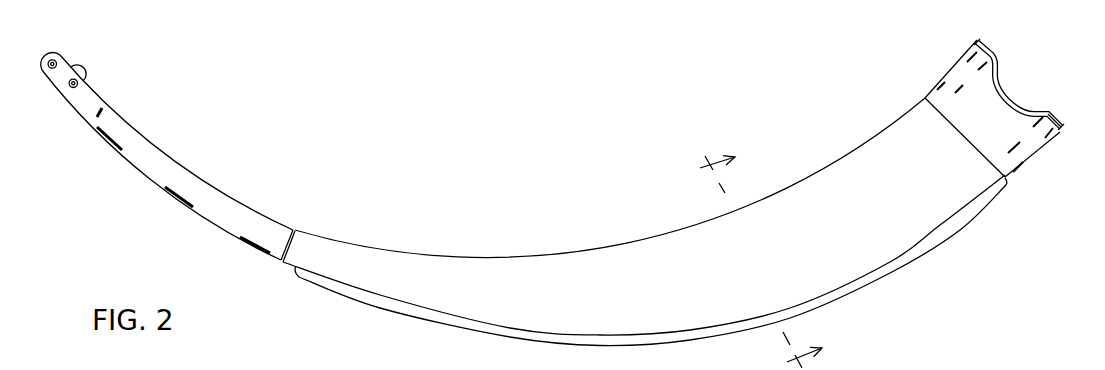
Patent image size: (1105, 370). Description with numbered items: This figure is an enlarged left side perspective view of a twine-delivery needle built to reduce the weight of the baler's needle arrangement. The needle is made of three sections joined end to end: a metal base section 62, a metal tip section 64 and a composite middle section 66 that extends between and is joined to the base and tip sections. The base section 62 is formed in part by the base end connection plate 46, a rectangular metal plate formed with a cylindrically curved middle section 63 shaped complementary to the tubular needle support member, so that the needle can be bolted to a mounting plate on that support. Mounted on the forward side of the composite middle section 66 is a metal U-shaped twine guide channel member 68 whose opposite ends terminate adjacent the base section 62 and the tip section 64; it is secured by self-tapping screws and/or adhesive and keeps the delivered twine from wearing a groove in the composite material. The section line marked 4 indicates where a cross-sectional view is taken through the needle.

The base end connection plate 46 is at (1060, 112).
The metal base section 62 is at (942, 70).
The cylindrically curved middle section 63 is at (1005, 92).
The metal tip section 64 is at (173, 152).
The composite middle section 66 is at (552, 250).
The U-shaped twine guide channel member 68 is at (402, 312).
The section line 4- 4 is at (759, 250).